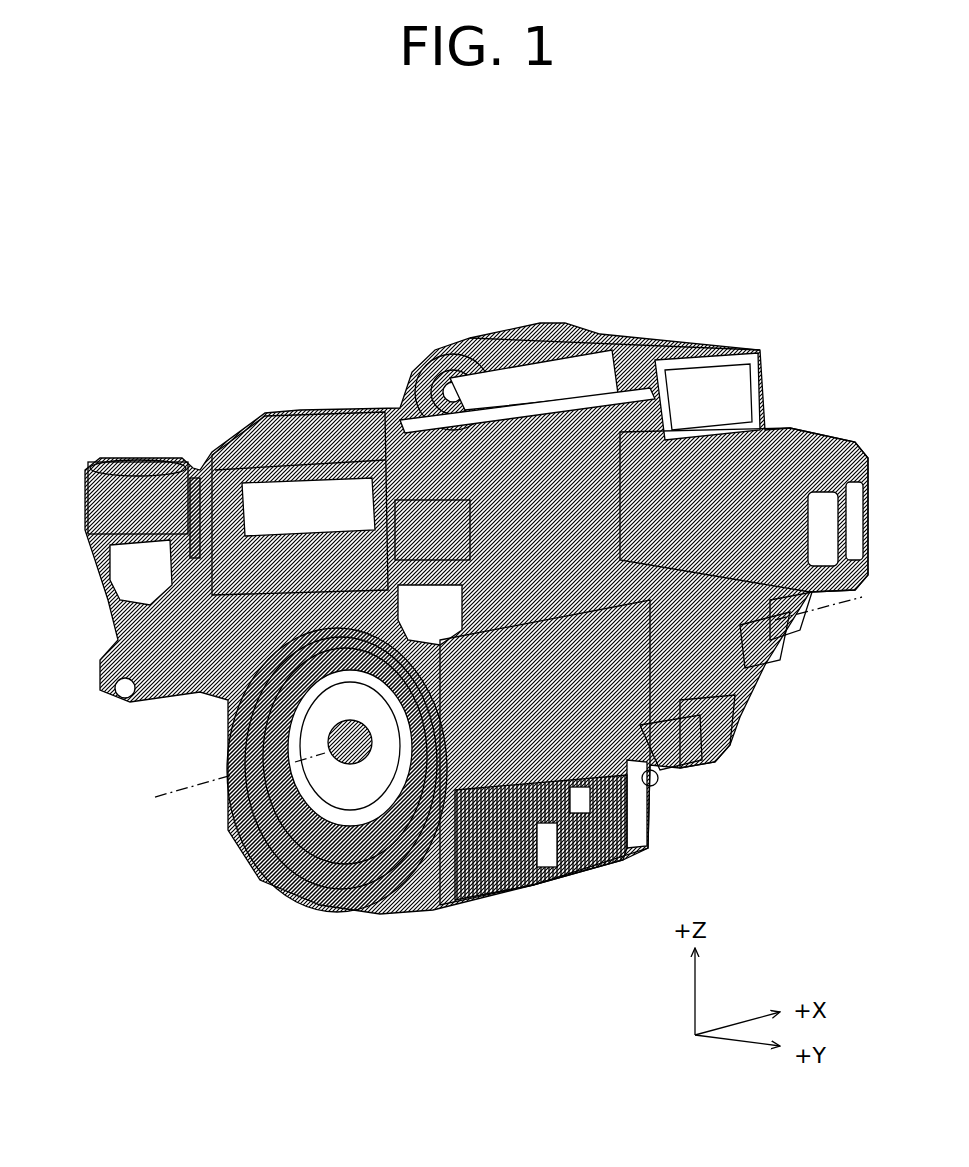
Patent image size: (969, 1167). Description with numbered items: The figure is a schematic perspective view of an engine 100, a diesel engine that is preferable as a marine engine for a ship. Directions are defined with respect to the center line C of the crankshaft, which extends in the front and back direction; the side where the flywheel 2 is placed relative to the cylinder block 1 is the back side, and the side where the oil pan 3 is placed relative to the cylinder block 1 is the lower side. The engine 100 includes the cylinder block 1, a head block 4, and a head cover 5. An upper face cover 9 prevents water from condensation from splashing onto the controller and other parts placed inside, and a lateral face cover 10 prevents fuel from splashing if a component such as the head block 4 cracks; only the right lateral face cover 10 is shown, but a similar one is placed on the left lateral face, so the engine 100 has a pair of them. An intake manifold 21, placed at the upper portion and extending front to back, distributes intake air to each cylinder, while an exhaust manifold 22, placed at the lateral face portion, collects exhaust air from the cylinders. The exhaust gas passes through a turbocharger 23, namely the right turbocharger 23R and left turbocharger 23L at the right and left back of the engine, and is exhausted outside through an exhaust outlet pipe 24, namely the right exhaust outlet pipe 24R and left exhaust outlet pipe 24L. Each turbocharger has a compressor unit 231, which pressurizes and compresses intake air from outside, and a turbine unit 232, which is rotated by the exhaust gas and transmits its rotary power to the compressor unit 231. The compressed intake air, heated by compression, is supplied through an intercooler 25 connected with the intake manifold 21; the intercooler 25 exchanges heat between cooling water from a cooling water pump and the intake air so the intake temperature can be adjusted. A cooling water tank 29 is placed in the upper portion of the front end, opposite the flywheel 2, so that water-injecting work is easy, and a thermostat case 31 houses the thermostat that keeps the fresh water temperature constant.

The engine 100 is at (208, 325).
The cylinder block 1 is at (583, 867).
The flywheel 2 is at (282, 843).
The oil pan 3 is at (490, 903).
The head block 4 is at (770, 648).
The head cover 5 is at (790, 625).
The upper face cover 9 is at (468, 352).
The lateral face cover 10 is at (743, 433).
The intake manifold 21 is at (647, 387).
The exhaust manifold 22 is at (660, 756).
The turbocharger 23 is at (396, 766).
The left turbocharger 23L is at (143, 673).
The right turbocharger 23R is at (650, 784).
The exhaust outlet pipe 24 is at (249, 632).
The left exhaust outlet pipe 24L is at (127, 573).
The right exhaust outlet pipe 24R is at (423, 617).
The intercooler 25 is at (285, 410).
The cooling water tank 29 is at (608, 330).
The thermostat case 31 is at (547, 322).
The compressor unit 231 is at (713, 705).
The turbine unit 232 is at (197, 505).
The center line of crankshaft C is at (165, 800).